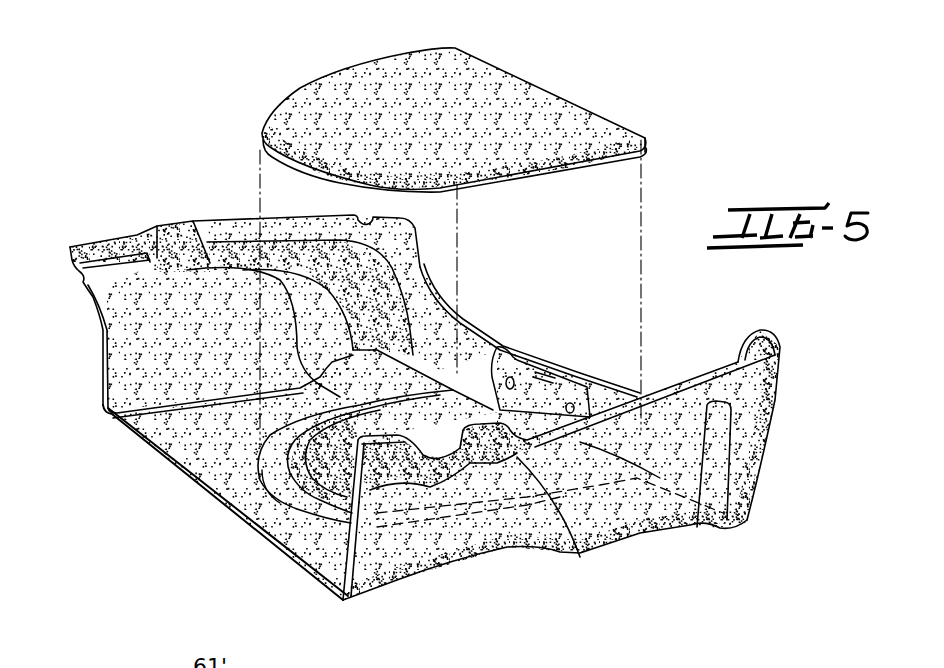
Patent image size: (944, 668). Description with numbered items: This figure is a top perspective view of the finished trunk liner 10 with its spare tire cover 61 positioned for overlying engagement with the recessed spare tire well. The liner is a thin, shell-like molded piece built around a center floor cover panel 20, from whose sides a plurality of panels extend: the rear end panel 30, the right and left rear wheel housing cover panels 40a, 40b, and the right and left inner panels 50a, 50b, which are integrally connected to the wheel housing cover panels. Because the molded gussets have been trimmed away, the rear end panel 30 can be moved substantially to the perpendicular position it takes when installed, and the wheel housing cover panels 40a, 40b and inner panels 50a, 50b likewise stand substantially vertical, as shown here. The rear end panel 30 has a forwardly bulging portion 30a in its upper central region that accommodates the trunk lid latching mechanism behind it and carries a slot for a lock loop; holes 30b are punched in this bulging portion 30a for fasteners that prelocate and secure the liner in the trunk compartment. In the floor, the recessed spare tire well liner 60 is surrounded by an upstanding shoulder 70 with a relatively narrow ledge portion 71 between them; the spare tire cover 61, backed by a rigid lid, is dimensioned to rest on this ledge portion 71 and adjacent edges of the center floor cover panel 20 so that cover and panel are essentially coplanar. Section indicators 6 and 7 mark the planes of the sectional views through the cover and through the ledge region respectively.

The trunk liner 10 is at (678, 220).
The spare tire cover 61 is at (378, 82).
The section line 6- 6 is at (543, 40).
The section line 7- 7 is at (217, 510).
The center floor cover panel 20 is at (163, 443).
The right rear wheel housing cover panel 40a is at (121, 351).
The left rear wheel housing cover panel 40b is at (390, 543).
The right inner panel 50a is at (335, 230).
The left inner panel 50b is at (660, 503).
The rear end panel 30 is at (467, 330).
The forwardly bulging portion 30a is at (573, 378).
The holes 30b is at (513, 363).
The spare tire well liner 60 is at (343, 495).
The upstanding shoulder 70 is at (273, 458).
The ledge portion 71 is at (300, 497).